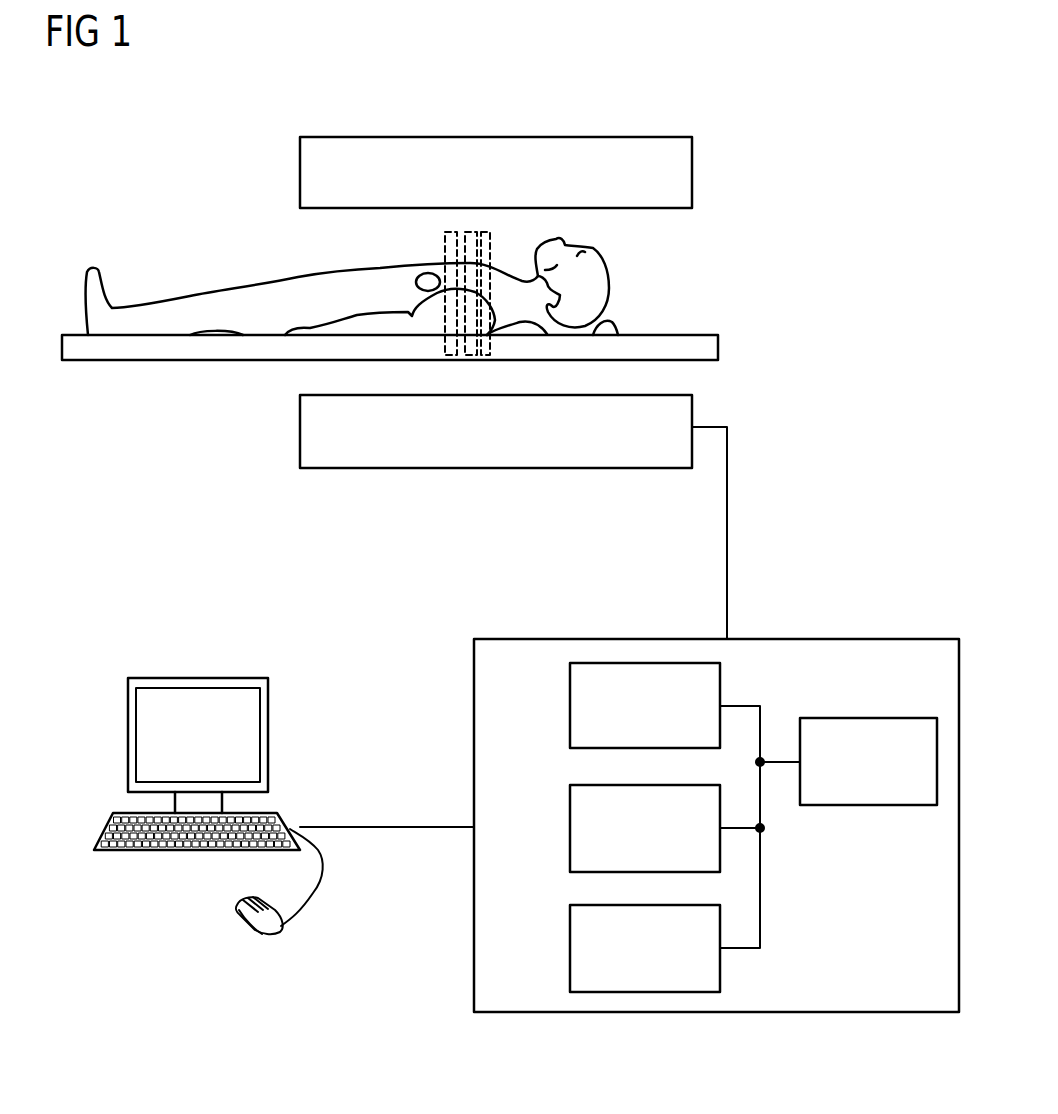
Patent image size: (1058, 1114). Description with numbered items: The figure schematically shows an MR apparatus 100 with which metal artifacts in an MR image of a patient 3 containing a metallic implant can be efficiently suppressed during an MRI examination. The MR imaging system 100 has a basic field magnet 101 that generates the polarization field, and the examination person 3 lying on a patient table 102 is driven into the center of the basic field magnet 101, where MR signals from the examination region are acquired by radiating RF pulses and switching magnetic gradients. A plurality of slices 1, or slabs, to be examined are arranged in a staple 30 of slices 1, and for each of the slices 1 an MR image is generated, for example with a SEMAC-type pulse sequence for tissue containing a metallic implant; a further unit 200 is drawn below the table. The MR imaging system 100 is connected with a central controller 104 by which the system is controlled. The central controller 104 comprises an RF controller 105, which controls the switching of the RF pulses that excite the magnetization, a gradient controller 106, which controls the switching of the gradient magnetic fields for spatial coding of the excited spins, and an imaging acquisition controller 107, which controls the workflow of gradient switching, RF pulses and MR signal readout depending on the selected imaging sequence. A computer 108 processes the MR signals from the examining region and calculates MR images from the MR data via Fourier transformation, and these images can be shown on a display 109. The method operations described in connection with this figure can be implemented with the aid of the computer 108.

The slices 1 is at (470, 252).
The patient 3 is at (157, 266).
The staple of slices 30 is at (436, 252).
The MR apparatus 100 is at (650, 105).
The basic field magnet 101 is at (692, 172).
The patient table 102 is at (74, 345).
The central controller 104 is at (842, 638).
The RF controller 105 is at (570, 709).
The gradient controller 106 is at (570, 829).
The imaging acquisition controller 107 is at (868, 718).
The computer 108 is at (570, 949).
The display 109 is at (197, 678).
The gradient coil unit 200 is at (428, 325).